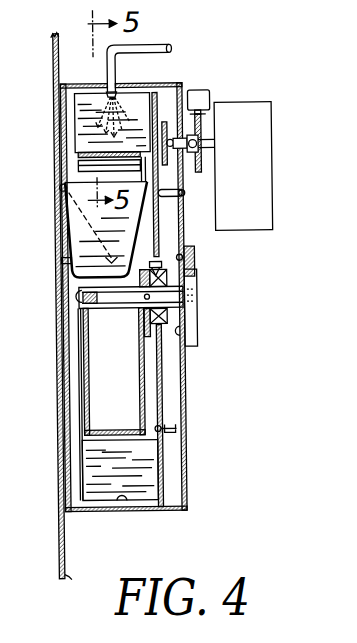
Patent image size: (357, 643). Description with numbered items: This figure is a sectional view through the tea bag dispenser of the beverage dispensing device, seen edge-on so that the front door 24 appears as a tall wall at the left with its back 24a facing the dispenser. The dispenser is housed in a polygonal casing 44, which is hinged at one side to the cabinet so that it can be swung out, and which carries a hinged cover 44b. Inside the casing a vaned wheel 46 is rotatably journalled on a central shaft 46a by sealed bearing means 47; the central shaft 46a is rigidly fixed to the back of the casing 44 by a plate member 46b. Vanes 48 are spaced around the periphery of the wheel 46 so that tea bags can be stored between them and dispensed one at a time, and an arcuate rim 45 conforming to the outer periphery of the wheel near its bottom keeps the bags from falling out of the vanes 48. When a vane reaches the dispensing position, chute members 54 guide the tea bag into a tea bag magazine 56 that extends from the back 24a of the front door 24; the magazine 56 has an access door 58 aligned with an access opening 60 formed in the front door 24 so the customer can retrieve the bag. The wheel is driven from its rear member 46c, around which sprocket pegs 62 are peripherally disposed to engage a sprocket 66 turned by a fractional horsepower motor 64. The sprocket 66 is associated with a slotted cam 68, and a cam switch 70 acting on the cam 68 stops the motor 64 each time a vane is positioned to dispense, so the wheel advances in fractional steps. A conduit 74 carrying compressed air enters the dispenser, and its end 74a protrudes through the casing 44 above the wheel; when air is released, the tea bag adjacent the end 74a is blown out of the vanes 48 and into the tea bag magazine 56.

The front door 24 is at (57, 534).
The back of the front door 24a is at (64, 549).
The polygonal casing 44 is at (185, 511).
The cover 44b is at (66, 429).
The arcuate rim 45 is at (118, 506).
The vaned wheel 46 is at (165, 368).
The central shaft 46a is at (175, 290).
The plate member 46b is at (197, 334).
The rear member of the vaned wheel 46c is at (162, 229).
The sealed bearing means 47 is at (168, 318).
The vanes 48 is at (80, 127).
The chute members 54 is at (86, 164).
The tea bag magazine 56 is at (92, 250).
The access door 58 is at (73, 230).
The access opening 60 is at (61, 190).
The sprocket pegs 62 is at (186, 194).
The fractional horsepower motor 64 is at (253, 188).
The sprocket 66 is at (165, 127).
The cam 68 is at (206, 131).
The cam switch 70 is at (199, 92).
The conduit 74 is at (175, 47).
The end of the conduit 74a is at (121, 93).